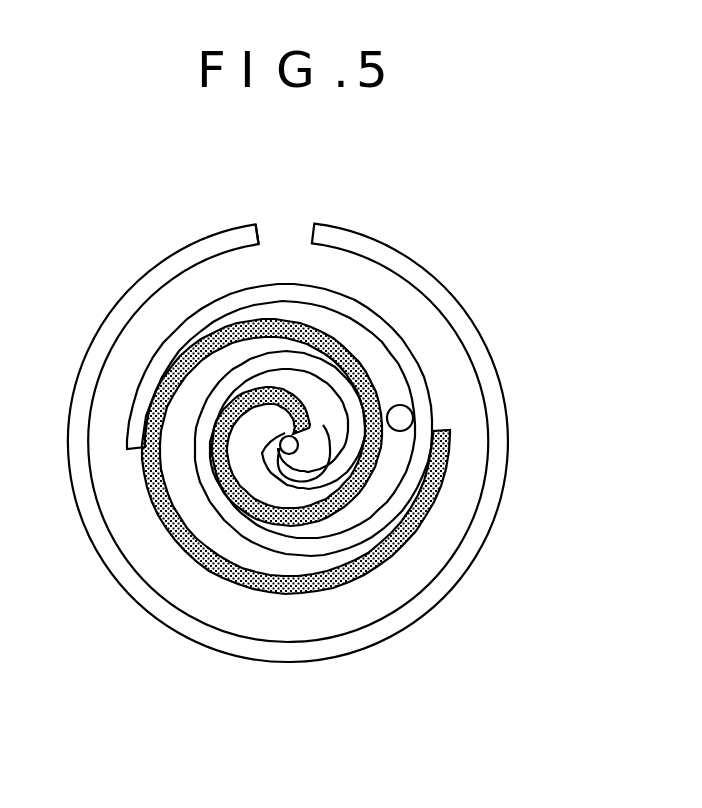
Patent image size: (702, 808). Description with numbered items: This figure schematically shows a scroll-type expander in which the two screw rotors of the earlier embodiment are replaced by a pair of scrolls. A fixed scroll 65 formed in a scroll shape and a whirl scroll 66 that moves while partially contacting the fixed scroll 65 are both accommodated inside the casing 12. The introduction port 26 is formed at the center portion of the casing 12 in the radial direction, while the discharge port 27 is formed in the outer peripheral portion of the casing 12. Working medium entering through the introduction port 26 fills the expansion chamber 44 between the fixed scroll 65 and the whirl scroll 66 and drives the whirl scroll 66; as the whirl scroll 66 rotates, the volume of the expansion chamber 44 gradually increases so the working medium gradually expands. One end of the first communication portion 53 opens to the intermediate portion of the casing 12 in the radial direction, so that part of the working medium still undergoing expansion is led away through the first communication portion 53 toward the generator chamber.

The casing 12 is at (125, 293).
The discharge port 27 is at (259, 233).
The fixed scroll 65 is at (373, 315).
The whirl scroll 66 is at (307, 598).
The expansion chamber 44 is at (320, 413).
The first communication portion 53 is at (413, 405).
The introduction port 26 is at (298, 450).